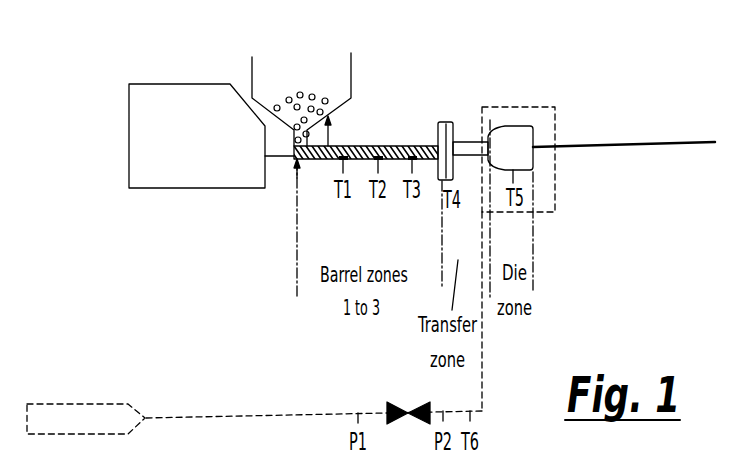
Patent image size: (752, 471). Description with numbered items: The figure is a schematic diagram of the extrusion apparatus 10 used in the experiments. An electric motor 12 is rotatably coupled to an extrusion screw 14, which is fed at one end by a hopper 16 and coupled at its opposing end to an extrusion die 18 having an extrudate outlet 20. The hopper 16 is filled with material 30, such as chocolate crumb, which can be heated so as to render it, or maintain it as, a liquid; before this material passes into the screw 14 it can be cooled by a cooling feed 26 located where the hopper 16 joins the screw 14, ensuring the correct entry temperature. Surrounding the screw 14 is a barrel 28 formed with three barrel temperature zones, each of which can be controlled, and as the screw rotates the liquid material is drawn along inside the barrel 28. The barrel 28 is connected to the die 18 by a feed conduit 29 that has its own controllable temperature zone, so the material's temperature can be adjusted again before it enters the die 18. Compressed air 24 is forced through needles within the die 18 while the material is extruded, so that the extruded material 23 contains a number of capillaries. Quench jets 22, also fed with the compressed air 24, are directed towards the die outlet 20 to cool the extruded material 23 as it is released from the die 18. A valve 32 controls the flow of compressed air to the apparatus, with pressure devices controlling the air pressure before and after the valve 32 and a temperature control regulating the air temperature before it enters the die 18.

The extrusion apparatus 10 is at (100, 291).
The electric motor 12 is at (190, 110).
The extrusion screw 14 is at (358, 146).
The hopper 16 is at (351, 72).
The extrusion die 18 is at (515, 143).
The extrudate outlet 20 is at (537, 131).
The quench jets 22 is at (549, 164).
The extruded material 23 is at (662, 147).
The compressed air 24 is at (96, 404).
The cooling feed 26 is at (300, 180).
The barrel 28 is at (395, 162).
The feed conduit 29 is at (461, 190).
The material 30 is at (283, 100).
The valve 32 is at (408, 401).